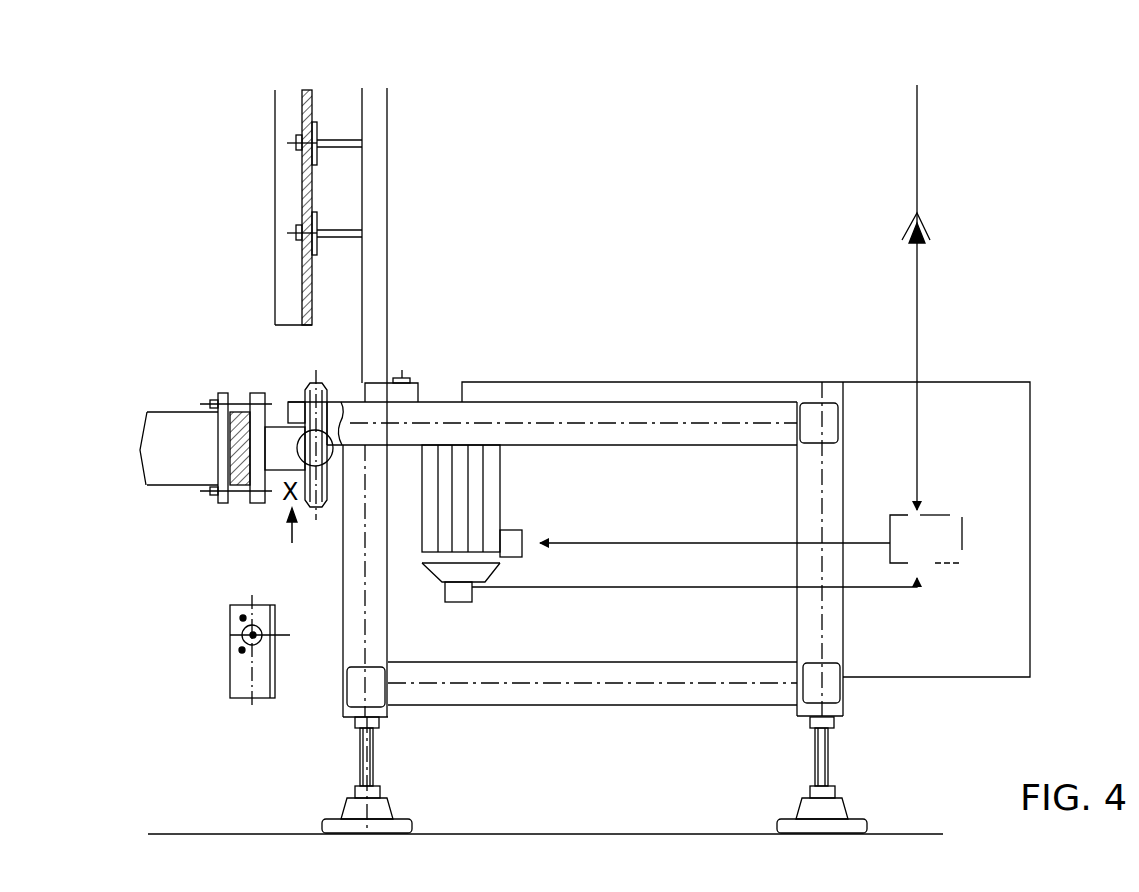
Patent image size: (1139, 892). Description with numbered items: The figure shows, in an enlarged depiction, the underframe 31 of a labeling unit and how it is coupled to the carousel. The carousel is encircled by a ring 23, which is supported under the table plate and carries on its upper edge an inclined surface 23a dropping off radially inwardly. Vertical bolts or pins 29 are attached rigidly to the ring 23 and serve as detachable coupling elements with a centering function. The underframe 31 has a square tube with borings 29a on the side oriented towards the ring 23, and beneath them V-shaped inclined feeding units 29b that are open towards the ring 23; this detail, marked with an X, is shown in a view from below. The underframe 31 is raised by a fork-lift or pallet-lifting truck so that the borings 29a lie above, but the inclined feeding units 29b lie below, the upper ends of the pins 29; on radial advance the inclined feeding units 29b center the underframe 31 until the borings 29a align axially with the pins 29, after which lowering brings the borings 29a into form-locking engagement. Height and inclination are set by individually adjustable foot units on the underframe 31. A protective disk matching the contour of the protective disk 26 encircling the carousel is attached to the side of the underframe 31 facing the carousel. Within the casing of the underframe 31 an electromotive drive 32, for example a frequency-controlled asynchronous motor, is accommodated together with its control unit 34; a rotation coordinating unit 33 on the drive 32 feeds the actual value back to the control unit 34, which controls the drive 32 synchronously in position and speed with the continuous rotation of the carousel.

The protective disk 26 is at (287, 163).
The ring 23 is at (176, 442).
The inclined surface 23a is at (238, 415).
The pin 29 is at (315, 385).
The boring 29a is at (253, 635).
The inclined feeding unit 29b is at (242, 650).
The underframe 31 is at (633, 380).
The electromotive drive 32 is at (442, 563).
The rotation coordinating unit 33 is at (462, 588).
The control unit 34 is at (940, 537).